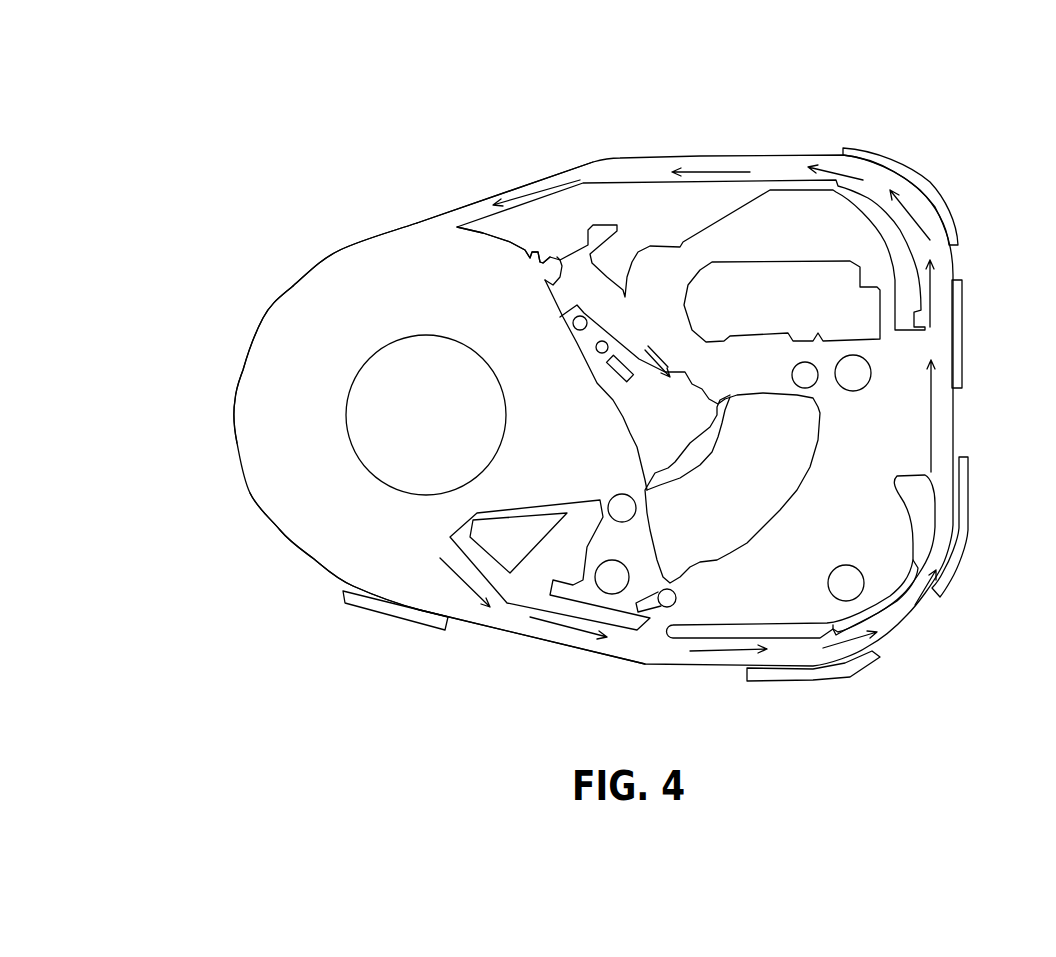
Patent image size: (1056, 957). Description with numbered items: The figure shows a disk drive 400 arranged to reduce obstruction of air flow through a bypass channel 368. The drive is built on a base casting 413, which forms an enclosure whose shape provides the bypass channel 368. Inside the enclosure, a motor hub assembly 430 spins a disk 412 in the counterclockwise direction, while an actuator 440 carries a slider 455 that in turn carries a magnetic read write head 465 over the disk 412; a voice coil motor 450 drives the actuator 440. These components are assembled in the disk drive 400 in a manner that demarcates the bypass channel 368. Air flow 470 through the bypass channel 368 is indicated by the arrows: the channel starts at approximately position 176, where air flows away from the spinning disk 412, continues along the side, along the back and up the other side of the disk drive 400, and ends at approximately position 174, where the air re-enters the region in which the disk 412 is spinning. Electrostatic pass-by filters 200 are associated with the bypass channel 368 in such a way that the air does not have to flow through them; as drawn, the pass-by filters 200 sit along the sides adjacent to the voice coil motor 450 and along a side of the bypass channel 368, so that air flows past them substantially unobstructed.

The disk drive 400 is at (273, 128).
The base casting 413 is at (242, 370).
The disk 412 is at (370, 363).
The position 174 is at (418, 253).
The position 176 is at (383, 522).
The motor hub assembly 430 is at (423, 403).
The magnetic read write head 465 is at (547, 280).
The slider 455 is at (550, 287).
The actuator 440 is at (655, 410).
The voice coil motor 450 is at (716, 535).
The air flow 470 is at (460, 578).
The bypass channel 368 is at (520, 623).
The electrostatic pass-by filters 200 is at (920, 188).